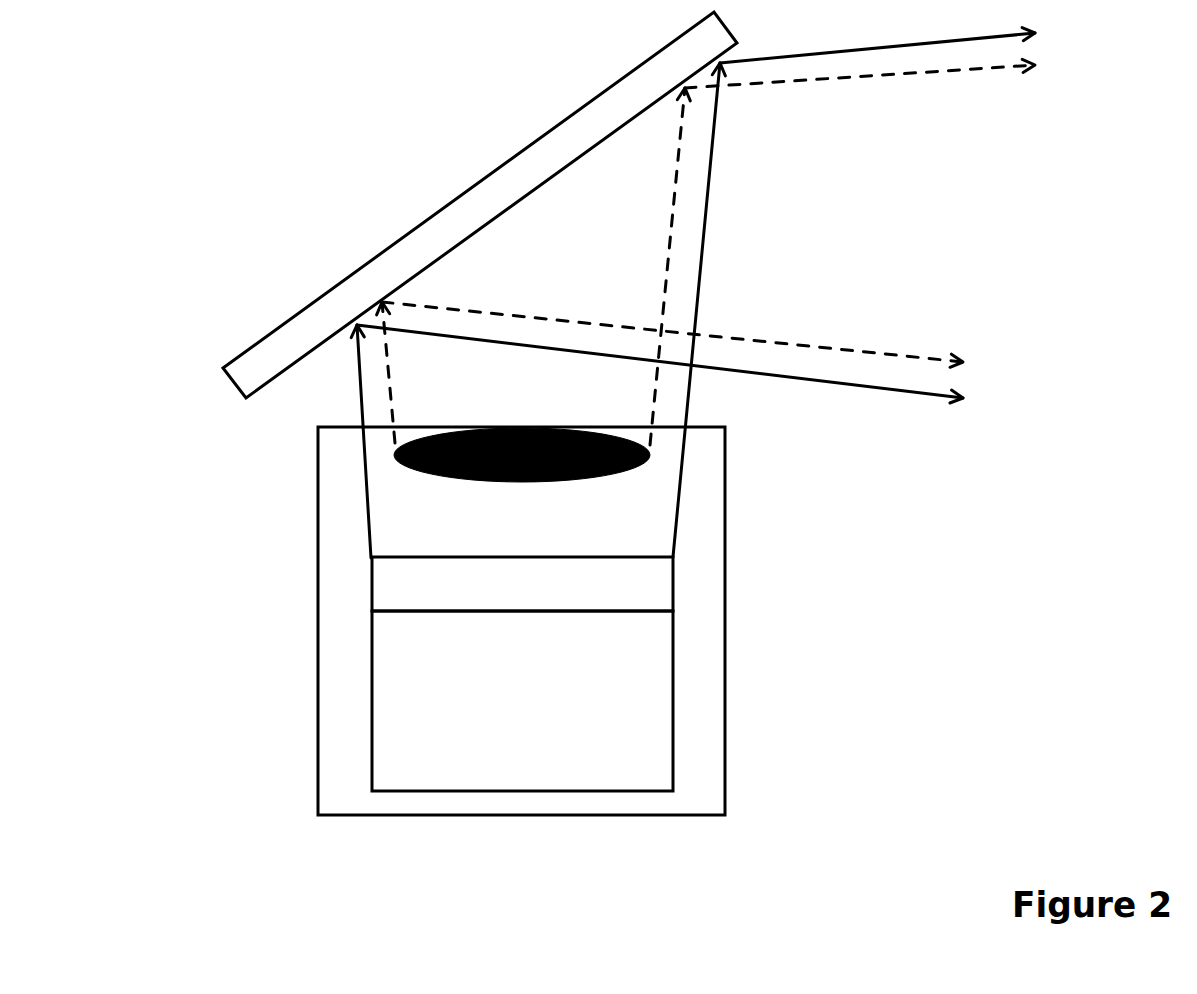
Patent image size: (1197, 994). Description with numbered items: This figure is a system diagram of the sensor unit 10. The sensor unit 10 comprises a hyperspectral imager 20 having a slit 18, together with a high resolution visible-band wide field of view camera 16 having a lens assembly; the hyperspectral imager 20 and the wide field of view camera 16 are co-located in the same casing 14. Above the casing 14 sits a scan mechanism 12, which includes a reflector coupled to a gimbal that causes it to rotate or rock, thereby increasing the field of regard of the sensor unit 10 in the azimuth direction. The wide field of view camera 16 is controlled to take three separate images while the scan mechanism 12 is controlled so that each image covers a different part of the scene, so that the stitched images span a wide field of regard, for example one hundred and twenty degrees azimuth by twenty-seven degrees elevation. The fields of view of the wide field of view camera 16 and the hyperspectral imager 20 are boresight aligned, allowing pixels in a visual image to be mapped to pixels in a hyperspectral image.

The sensor unit 10 is at (188, 158).
The scan mechanism 12 is at (527, 150).
The casing 14 is at (317, 647).
The wide field of view camera 16 is at (649, 455).
The slit 18 is at (673, 598).
The hyperspectral imager 20 is at (673, 718).